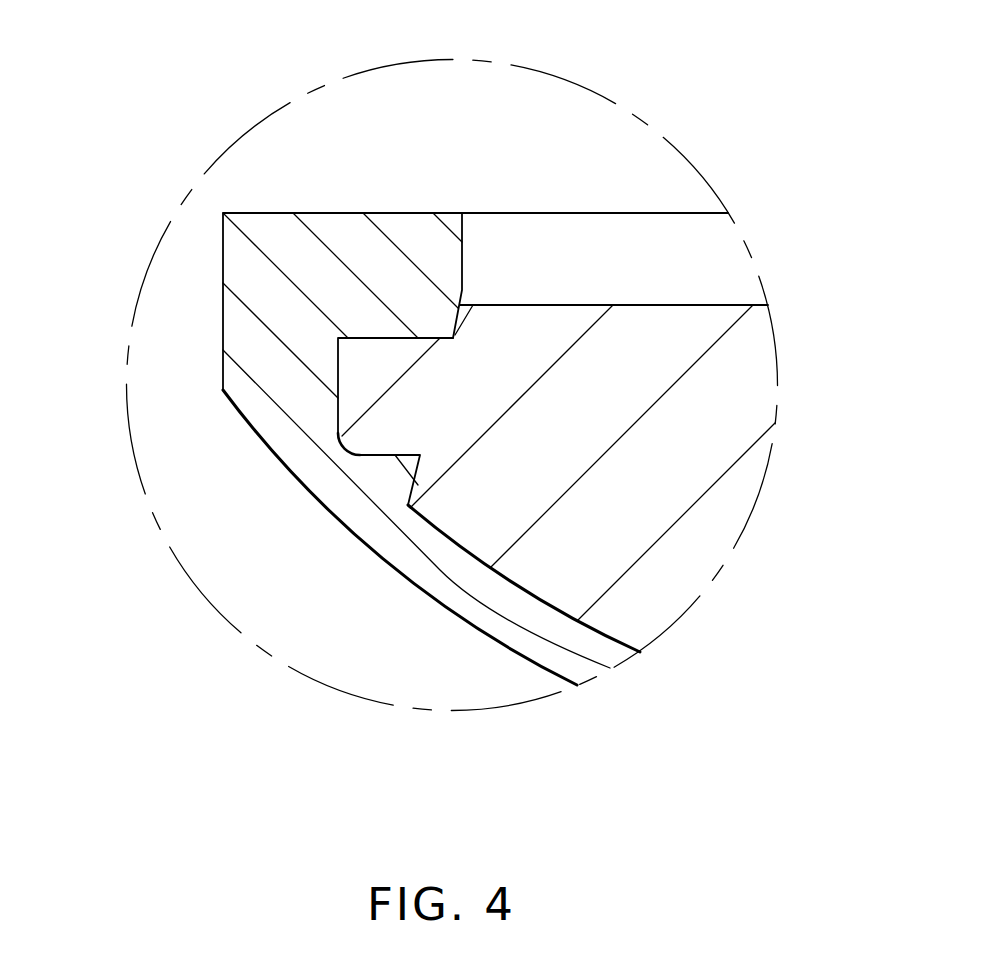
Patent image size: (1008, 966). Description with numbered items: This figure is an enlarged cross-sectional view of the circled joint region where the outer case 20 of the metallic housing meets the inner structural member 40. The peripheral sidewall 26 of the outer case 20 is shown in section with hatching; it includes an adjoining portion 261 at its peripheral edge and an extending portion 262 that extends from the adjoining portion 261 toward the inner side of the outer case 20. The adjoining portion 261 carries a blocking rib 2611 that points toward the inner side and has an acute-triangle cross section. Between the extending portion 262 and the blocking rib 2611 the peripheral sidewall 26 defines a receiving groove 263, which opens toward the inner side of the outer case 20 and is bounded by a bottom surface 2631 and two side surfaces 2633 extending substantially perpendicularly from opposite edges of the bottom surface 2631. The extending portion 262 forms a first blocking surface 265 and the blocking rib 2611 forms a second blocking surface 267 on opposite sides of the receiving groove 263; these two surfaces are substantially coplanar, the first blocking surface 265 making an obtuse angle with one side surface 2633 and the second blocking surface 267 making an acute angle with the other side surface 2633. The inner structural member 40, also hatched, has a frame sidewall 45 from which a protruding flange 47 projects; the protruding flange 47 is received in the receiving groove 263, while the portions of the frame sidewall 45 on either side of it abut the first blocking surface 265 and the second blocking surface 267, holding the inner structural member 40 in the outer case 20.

The outer case 20 is at (542, 640).
The peripheral sidewall 26 is at (253, 0).
The adjoining portion 261 is at (237, 330).
The extending portion 262 is at (350, 290).
The receiving groove 263 is at (150, 642).
The bottom surface 2631 is at (337, 412).
The side surfaces 2633 is at (367, 338).
The blocking rib 2611 is at (393, 468).
The first blocking surface 265 is at (456, 330).
The second blocking surface 267 is at (440, 480).
The inner structural member 40 is at (745, 355).
The frame sidewall 45 is at (414, 481).
The protruding flange 47 is at (383, 403).